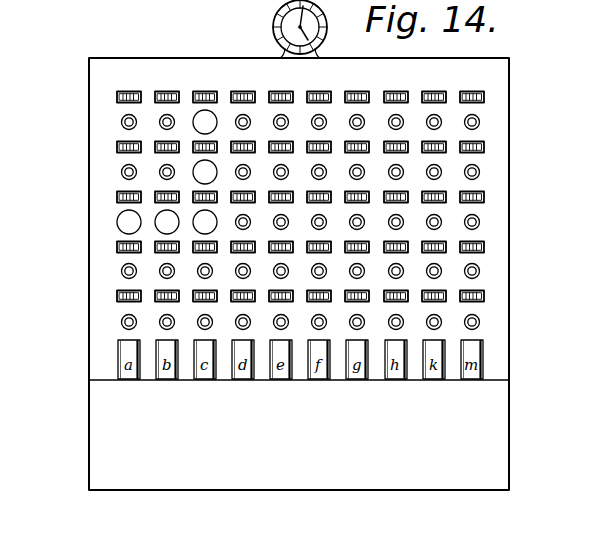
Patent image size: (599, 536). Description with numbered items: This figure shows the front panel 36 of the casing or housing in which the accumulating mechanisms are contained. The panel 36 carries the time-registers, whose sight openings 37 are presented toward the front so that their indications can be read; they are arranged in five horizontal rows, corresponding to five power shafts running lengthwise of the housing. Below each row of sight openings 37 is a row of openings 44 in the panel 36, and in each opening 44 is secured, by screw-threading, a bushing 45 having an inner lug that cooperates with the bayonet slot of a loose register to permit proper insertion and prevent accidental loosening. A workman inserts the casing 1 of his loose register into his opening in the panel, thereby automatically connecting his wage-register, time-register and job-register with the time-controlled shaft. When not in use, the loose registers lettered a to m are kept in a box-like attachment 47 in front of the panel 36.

The casing 1 is at (203, 117).
The panel 36 is at (97, 237).
The sight openings 37 is at (167, 94).
The openings 44 is at (160, 124).
The bushing 45 is at (122, 120).
The box-like attachment 47 is at (503, 430).